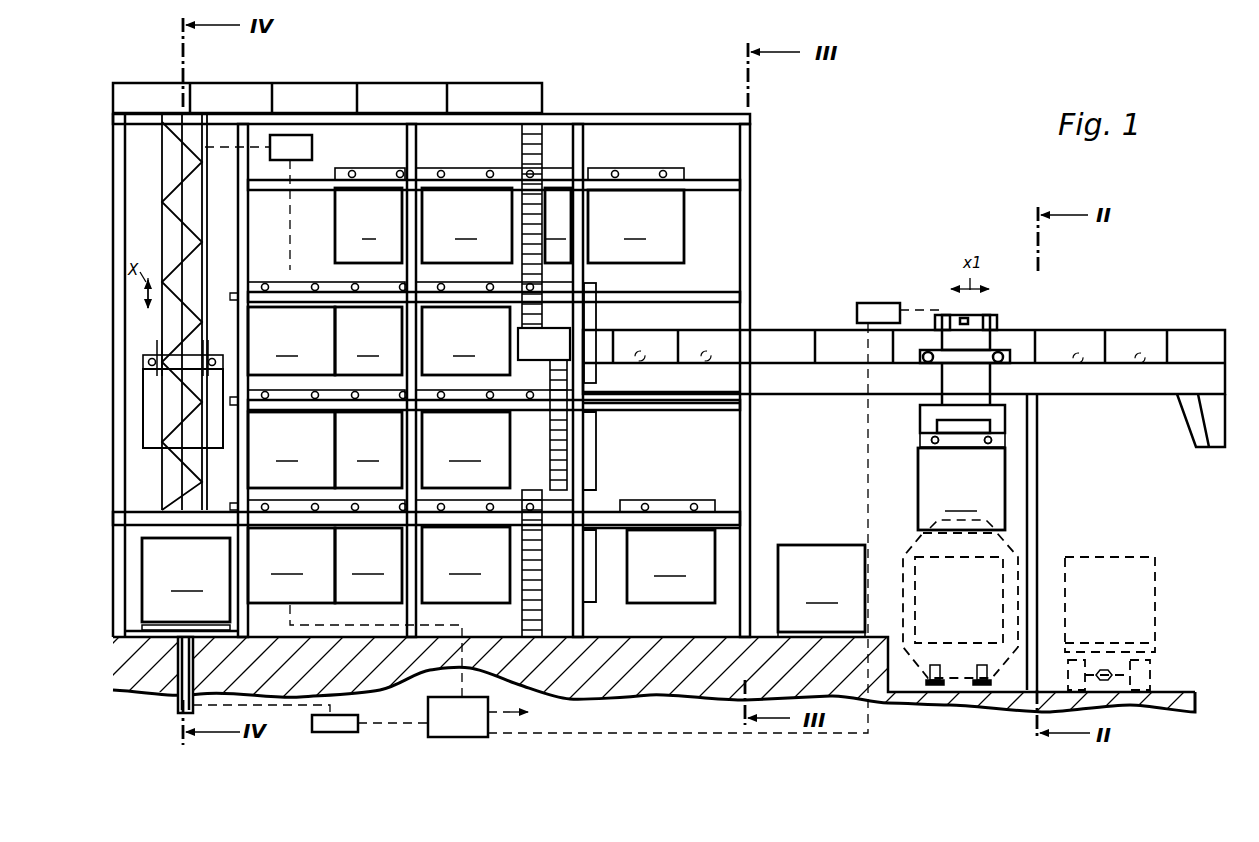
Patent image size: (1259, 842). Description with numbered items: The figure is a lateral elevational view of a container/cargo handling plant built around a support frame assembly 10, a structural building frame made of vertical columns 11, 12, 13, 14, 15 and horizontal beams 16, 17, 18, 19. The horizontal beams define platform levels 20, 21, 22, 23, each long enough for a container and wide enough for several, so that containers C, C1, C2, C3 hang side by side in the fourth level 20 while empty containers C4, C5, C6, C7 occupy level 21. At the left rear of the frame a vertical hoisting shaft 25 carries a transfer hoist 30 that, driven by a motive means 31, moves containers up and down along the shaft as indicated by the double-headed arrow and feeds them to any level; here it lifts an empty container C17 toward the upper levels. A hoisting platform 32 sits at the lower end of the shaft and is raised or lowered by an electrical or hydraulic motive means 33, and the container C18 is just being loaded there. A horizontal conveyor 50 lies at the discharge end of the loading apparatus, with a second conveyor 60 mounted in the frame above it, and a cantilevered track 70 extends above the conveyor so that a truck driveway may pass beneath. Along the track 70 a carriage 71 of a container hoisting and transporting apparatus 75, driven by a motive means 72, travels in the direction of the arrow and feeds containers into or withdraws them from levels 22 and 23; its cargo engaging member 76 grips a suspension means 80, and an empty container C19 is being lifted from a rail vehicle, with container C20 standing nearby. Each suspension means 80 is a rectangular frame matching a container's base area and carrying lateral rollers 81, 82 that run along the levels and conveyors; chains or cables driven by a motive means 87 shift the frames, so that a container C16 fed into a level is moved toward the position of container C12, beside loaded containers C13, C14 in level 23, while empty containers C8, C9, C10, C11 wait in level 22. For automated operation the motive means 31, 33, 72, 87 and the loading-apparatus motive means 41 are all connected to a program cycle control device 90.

The support frame assembly 10 is at (758, 142).
The vertical column 11 is at (740, 135).
The vertical column 12 is at (584, 140).
The vertical column 13 is at (412, 145).
The vertical column 14 is at (247, 113).
The vertical column 15 is at (118, 192).
The horizontal beam 16 is at (740, 190).
The horizontal beam 17 is at (722, 297).
The horizontal beam 18 is at (735, 405).
The horizontal beam 19 is at (727, 515).
The platform level 20 is at (708, 186).
The platform level 21 is at (705, 284).
The platform level 22 is at (668, 398).
The platform level 23 is at (613, 508).
The hoisting shaft 25 is at (133, 123).
The transfer hoist 30 is at (160, 322).
The motive means 31 is at (312, 150).
The hoisting platform 32 is at (142, 627).
The motive means 33 is at (312, 726).
The motive means 41 is at (524, 718).
The motive means 87 is at (678, 528).
The horizontal conveyor 50 is at (720, 548).
The second conveyor 60 is at (718, 462).
The cantilevered track 70 is at (1107, 370).
The carriage 71 is at (975, 355).
The motive means 72 is at (857, 311).
The container hoisting and transporting apparatus 75 is at (910, 405).
The cargo engaging member 76 is at (995, 418).
The suspension means 80 is at (388, 174).
The roller 81 is at (933, 443).
The roller 82 is at (988, 444).
The program cycle control device 90 is at (389, 668).
The container C is at (368, 225).
The container C1 is at (467, 225).
The container C2 is at (557, 225).
The container C3 is at (636, 226).
The container C4 is at (291, 341).
The container C5 is at (368, 341).
The container C6 is at (466, 341).
The container C7 is at (597, 320).
The container C8 is at (291, 450).
The container C9 is at (368, 450).
The container C10 is at (466, 450).
The container C11 is at (597, 442).
The container C12 is at (291, 565).
The container C13 is at (368, 565).
The container C14 is at (466, 565).
The container C16 is at (671, 566).
The container C17 is at (149, 445).
The container C18 is at (186, 584).
The container C19 is at (961, 489).
The container C20 is at (821, 591).